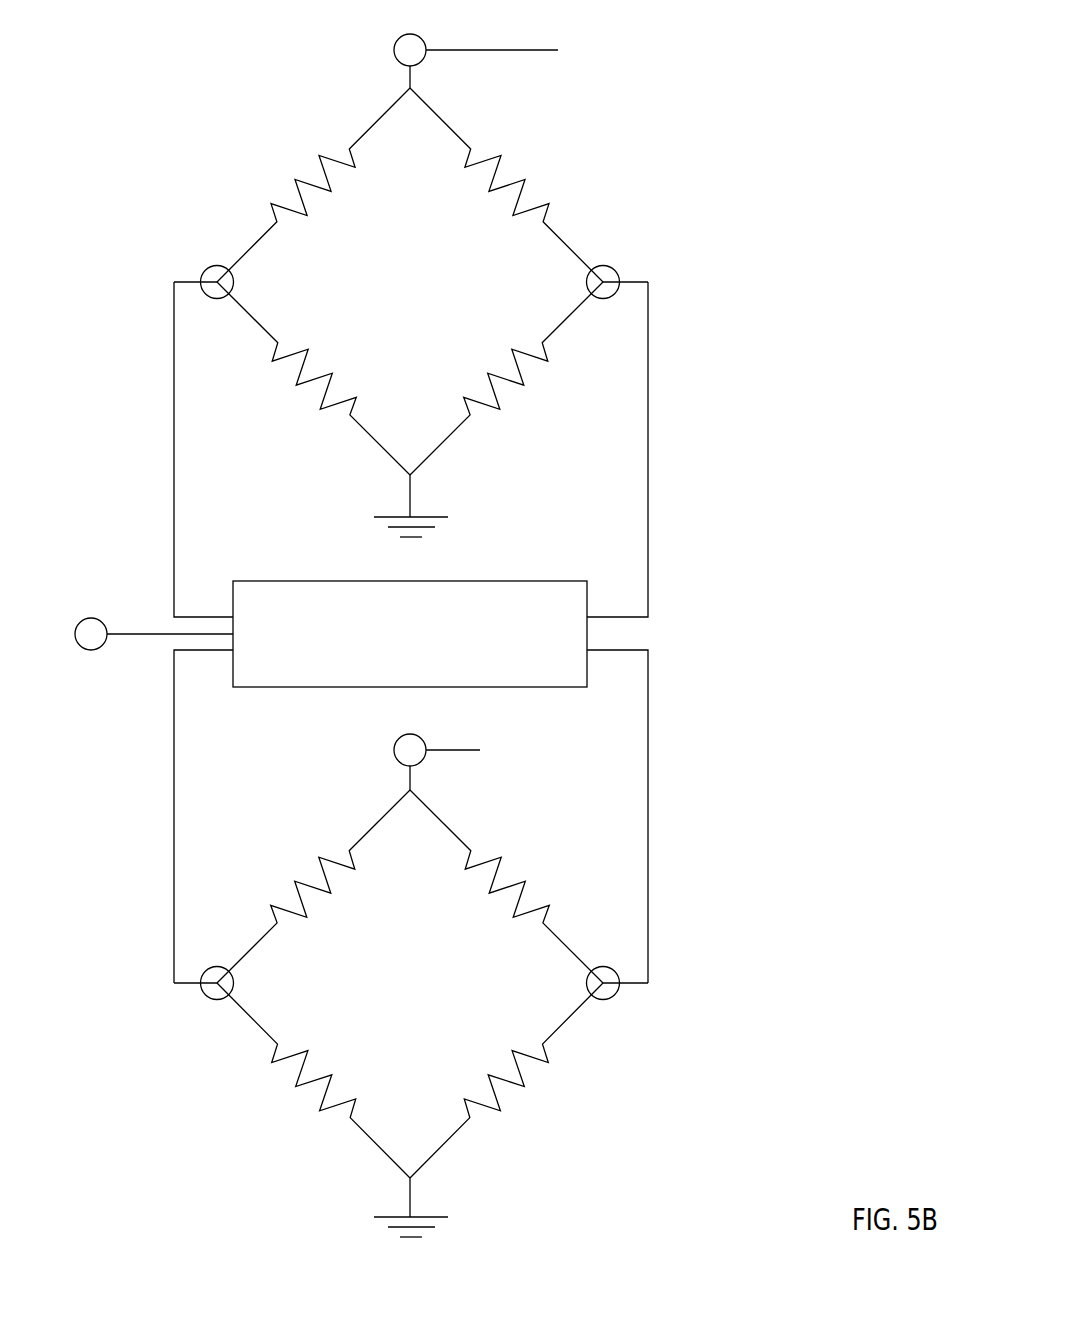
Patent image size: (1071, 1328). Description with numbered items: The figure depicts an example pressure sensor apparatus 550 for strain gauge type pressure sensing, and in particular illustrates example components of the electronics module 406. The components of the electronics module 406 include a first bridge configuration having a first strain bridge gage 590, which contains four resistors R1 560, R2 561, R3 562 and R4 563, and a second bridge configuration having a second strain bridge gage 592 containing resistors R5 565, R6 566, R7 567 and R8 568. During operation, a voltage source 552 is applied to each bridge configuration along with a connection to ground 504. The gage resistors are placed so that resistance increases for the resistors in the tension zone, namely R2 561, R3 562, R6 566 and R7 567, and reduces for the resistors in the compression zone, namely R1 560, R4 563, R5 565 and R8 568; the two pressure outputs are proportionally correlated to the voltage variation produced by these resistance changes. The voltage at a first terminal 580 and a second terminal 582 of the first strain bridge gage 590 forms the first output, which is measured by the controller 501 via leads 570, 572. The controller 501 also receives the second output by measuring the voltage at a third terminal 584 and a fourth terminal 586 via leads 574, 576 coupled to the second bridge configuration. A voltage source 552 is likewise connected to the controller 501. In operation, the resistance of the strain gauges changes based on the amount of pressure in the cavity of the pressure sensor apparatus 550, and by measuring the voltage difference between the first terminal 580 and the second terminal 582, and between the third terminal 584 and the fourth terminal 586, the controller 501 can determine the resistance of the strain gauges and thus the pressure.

The pressure sensor apparatus 550 is at (895, 68).
The electronics module 406 is at (788, 303).
The voltage source 552 is at (30, 587).
The controller 501 is at (297, 648).
The ground 504 is at (482, 523).
The resistor R1 560 is at (395, 196).
The resistor R2 561 is at (367, 385).
The resistor R3 562 is at (534, 250).
The resistor R4 563 is at (562, 428).
The resistor R5 565 is at (370, 933).
The resistor R6 566 is at (303, 1139).
The resistor R7 567 is at (497, 948).
The resistor R8 568 is at (559, 1131).
The lead 570 is at (186, 476).
The lead 572 is at (657, 478).
The lead 574 is at (187, 835).
The lead 576 is at (657, 835).
The first terminal 580 is at (210, 258).
The second terminal 582 is at (605, 257).
The third terminal 584 is at (200, 1000).
The fourth terminal 586 is at (620, 998).
The first strain bridge gage 590 is at (411, 281).
The second strain bridge gage 592 is at (410, 984).